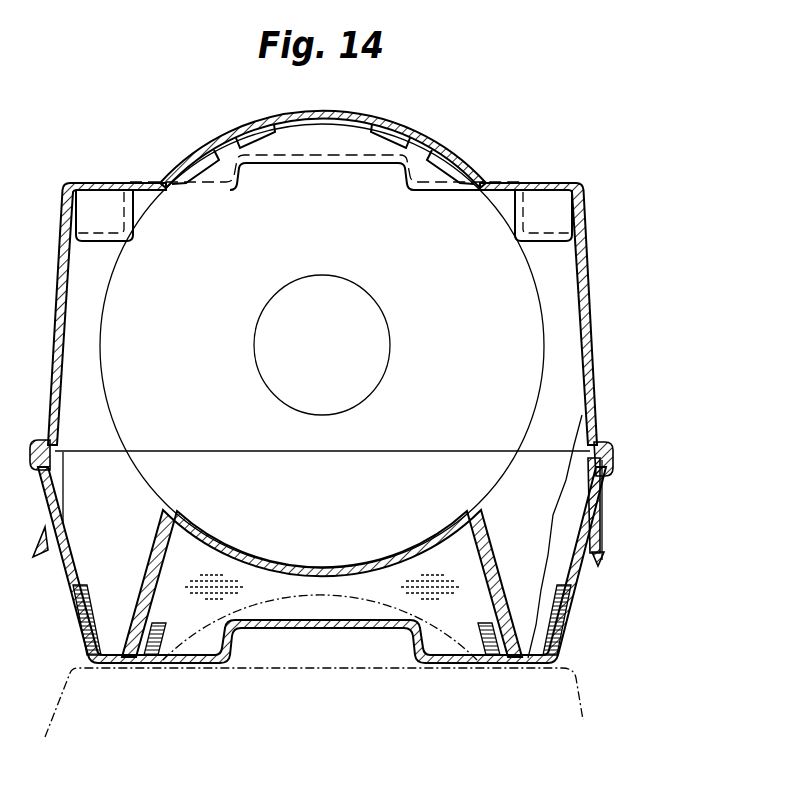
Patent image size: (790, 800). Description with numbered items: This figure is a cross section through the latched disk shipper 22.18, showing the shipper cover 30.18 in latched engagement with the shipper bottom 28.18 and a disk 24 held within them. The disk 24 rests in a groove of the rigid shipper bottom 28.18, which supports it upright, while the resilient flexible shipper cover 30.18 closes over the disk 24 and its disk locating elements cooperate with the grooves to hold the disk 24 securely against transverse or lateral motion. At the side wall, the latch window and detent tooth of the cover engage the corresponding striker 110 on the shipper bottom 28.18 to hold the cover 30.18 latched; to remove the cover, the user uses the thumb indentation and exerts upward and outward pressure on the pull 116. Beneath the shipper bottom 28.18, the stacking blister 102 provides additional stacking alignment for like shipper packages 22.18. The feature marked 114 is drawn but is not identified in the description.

The disk 24 is at (488, 193).
The shipper cover 30.18 is at (615, 302).
The disk shipper 22.18 is at (641, 452).
The striker 110 is at (598, 520).
The pull 116 is at (602, 549).
The shipper bottom 28.18 is at (605, 584).
The slot 114 is at (148, 625).
The stacking blister 102 is at (337, 640).